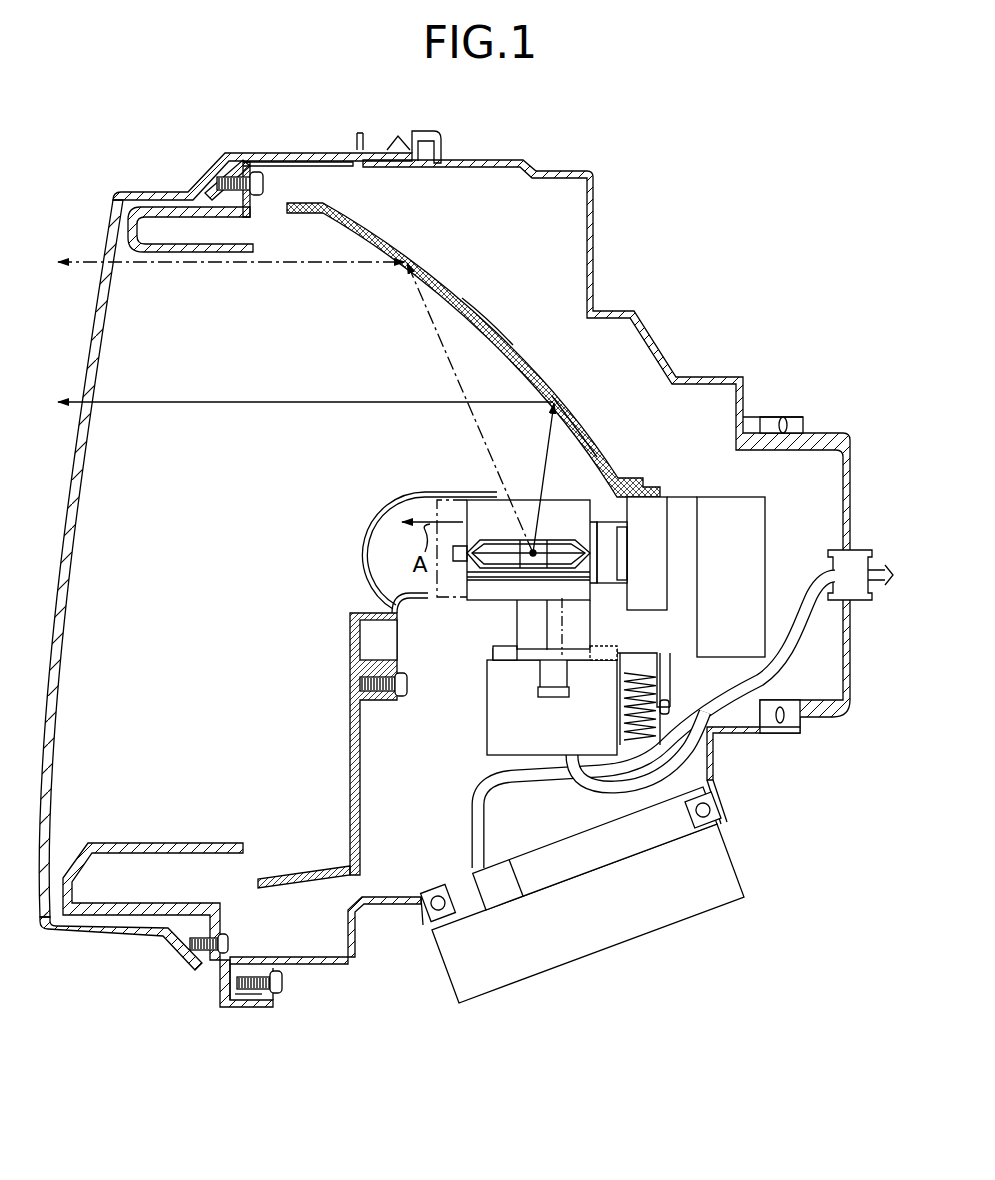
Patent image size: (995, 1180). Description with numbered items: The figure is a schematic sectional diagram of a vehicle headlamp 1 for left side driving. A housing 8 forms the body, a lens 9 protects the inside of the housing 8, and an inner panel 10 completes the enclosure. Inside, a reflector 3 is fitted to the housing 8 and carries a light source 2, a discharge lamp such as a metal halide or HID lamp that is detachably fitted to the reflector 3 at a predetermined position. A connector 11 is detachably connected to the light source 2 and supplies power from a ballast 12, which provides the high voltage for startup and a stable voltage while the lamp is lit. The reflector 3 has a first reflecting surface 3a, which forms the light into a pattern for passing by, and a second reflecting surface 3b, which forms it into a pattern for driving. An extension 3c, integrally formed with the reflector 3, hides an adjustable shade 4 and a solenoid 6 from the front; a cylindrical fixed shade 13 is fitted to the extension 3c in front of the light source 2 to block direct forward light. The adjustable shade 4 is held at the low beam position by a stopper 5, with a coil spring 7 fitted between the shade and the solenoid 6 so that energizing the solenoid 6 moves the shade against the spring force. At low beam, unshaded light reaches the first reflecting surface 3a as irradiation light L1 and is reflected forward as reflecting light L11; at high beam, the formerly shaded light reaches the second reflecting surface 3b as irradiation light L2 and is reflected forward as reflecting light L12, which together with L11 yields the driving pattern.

The headlamp 1 is at (799, 160).
The light source 2 is at (580, 538).
The reflector 3 is at (447, 286).
The first reflecting surface 3a is at (585, 432).
The second reflecting surface 3b is at (487, 322).
The extension 3c is at (353, 760).
The adjustable shade 4 is at (484, 604).
The stopper 5 is at (487, 653).
The solenoid 6 is at (500, 727).
The coil spring 7 is at (690, 770).
The housing 8 is at (660, 345).
The lens 9 is at (103, 292).
The inner panel 10 is at (160, 212).
The connector 11 is at (708, 517).
The ballast 12 is at (725, 882).
The fixed shade 13 is at (362, 535).
The irradiation light L1 is at (550, 437).
The irradiation light L2 is at (490, 452).
The reflecting light L11 is at (215, 403).
The reflecting light L12 is at (212, 265).